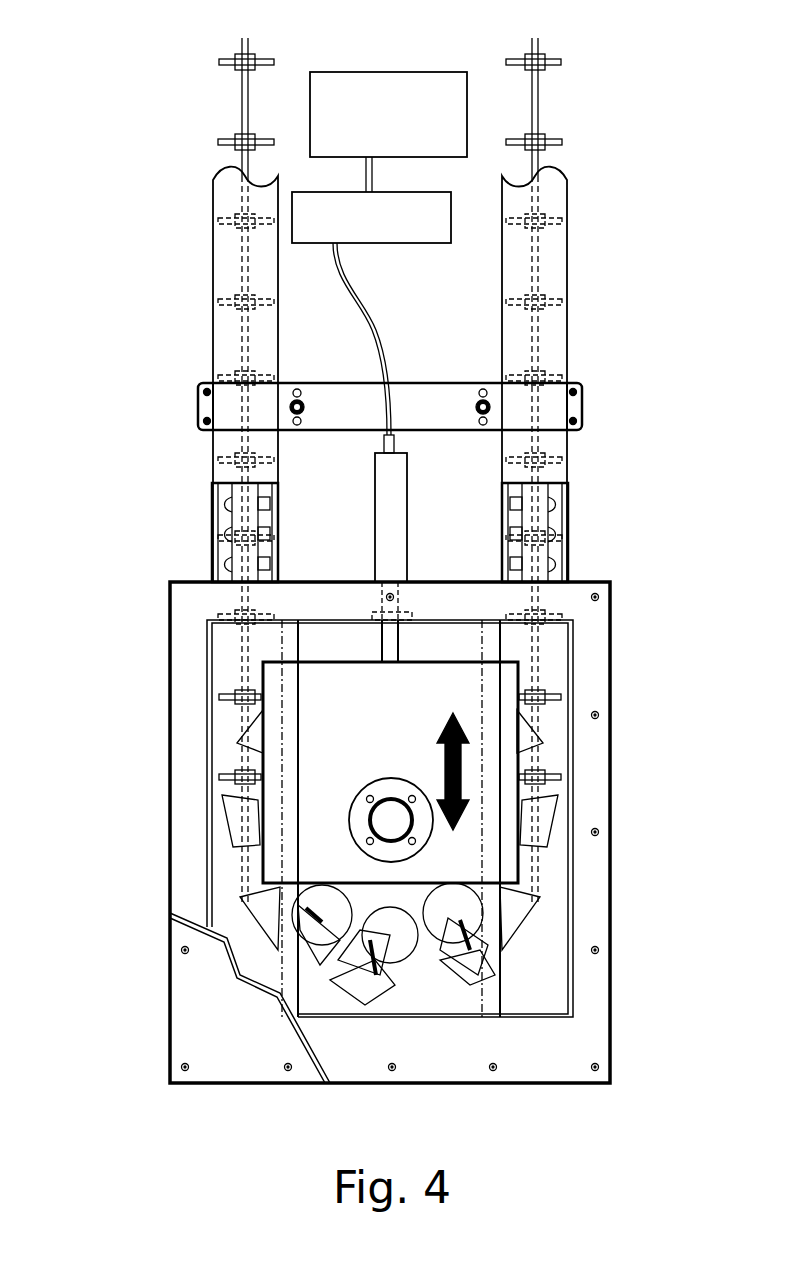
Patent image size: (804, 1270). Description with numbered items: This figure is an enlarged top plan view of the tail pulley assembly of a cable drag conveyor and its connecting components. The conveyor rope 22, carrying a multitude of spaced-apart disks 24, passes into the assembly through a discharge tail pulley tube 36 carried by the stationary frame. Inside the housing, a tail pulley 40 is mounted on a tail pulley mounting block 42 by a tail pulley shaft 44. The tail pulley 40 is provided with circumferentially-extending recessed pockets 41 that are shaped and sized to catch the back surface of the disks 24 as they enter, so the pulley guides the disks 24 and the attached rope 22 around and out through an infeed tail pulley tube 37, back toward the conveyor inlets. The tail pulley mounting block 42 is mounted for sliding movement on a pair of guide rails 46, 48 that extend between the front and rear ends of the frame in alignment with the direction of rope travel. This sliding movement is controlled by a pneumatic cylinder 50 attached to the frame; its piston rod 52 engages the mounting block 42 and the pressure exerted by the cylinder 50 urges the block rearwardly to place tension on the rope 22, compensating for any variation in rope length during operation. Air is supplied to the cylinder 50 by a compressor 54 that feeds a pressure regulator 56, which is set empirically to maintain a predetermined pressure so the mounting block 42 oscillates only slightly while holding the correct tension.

The conveyor rope 22 is at (242, 108).
The disks 24 is at (565, 62).
The discharge tail pulley tube 36 is at (213, 528).
The infeed tail pulley tube 37 is at (568, 505).
The tail pulley 40 is at (407, 892).
The recessed pockets 41 is at (327, 893).
The tail pulley mounting block 42 is at (330, 790).
The tail pulley shaft 44 is at (391, 820).
The guide rail 46 is at (290, 650).
The guide rail 48 is at (495, 650).
The pneumatic cylinder 50 is at (400, 555).
The piston rod 52 is at (393, 650).
The compressor 54 is at (342, 82).
The pressure regulator 56 is at (425, 243).